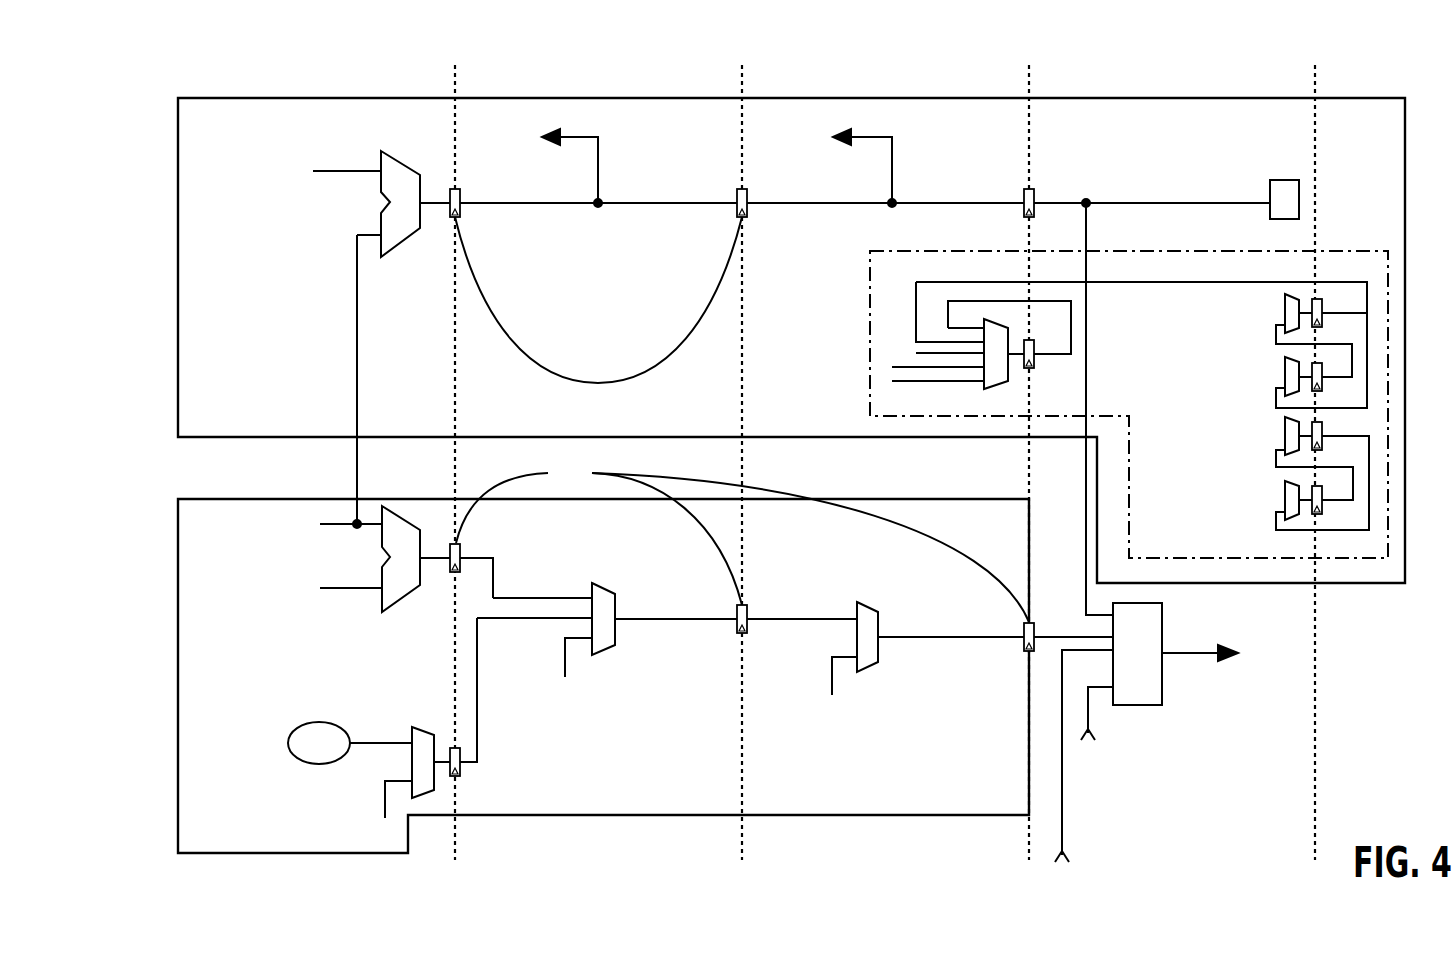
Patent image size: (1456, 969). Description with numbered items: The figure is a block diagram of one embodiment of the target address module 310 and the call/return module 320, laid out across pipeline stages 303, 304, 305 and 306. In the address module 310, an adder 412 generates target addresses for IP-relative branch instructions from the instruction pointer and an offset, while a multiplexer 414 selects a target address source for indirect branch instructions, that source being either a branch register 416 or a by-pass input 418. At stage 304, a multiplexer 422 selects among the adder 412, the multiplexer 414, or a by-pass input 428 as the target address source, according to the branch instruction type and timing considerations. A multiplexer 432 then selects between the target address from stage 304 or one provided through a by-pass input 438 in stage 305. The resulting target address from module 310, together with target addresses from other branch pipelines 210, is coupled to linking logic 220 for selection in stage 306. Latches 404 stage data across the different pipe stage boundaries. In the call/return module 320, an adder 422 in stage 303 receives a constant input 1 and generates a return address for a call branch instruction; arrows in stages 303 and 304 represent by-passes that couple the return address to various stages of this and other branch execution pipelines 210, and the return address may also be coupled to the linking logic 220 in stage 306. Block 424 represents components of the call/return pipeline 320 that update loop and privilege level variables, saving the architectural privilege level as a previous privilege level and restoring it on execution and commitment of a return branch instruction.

The pipeline stage 303 is at (315, 62).
The pipeline stage 304 is at (601, 62).
The pipeline stage 305 is at (891, 62).
The pipeline stage 306 is at (1169, 62).
The call/return module 320 is at (170, 326).
The target address module 310 is at (170, 611).
The constant input 1 is at (338, 171).
The multiplexer / adder 422 is at (601, 583).
The latches 404 is at (742, 419).
The block 424 is at (1396, 465).
The adder 412 is at (434, 559).
The by-pass input 428 is at (569, 671).
The multiplexer 432 is at (866, 602).
The by-pass input 438 is at (837, 690).
The multiplexer 414 is at (423, 727).
The branch register 416 is at (350, 743).
The by-pass input 418 is at (389, 813).
The linking logic 220 is at (1175, 654).
The branch pipelines 210 is at (1090, 771).